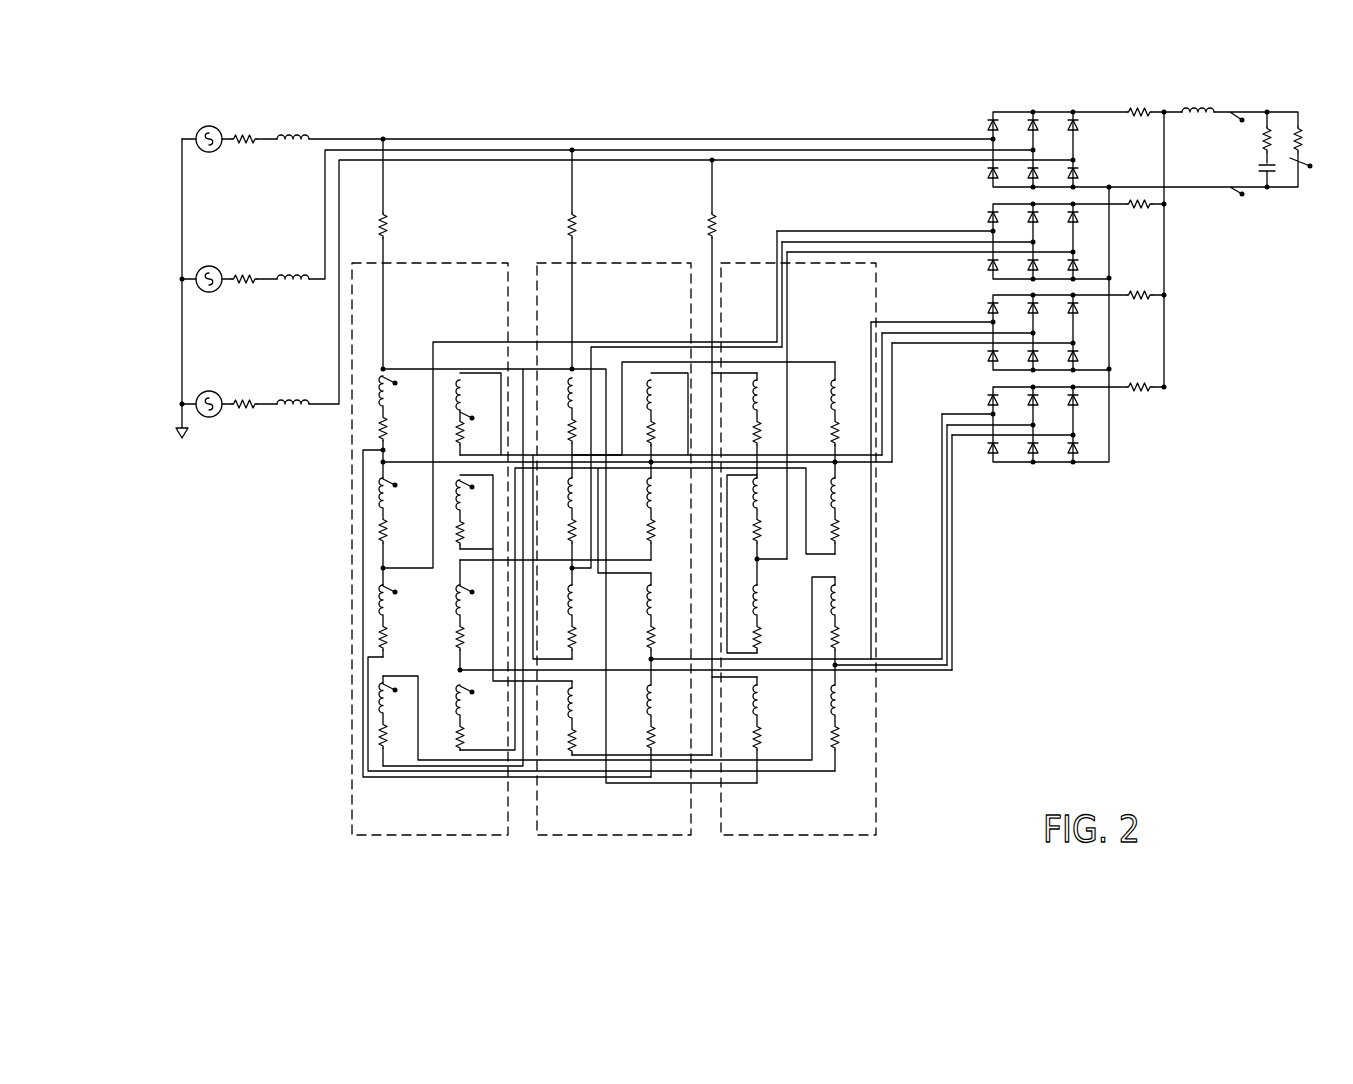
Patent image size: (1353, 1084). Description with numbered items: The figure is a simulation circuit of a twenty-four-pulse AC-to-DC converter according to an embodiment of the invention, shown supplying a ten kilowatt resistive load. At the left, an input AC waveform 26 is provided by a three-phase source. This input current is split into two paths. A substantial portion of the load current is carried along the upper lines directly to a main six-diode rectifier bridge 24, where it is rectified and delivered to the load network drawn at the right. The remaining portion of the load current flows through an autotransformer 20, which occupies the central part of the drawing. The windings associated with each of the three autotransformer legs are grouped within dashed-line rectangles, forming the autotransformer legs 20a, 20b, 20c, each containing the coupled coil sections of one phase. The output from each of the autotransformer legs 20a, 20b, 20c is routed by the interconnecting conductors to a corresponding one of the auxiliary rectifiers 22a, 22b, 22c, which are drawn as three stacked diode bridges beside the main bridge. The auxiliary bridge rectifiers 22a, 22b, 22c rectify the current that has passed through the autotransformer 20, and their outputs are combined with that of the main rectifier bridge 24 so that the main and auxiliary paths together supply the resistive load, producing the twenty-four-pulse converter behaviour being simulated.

The autotransformer 20 is at (662, 512).
The autotransformer leg 20a is at (480, 835).
The autotransformer leg 20b is at (655, 835).
The autotransformer leg 20c is at (826, 835).
The auxiliary rectifier 22a is at (1132, 243).
The auxiliary rectifier 22b is at (1132, 334).
The auxiliary rectifier 22c is at (1135, 424).
The main 6-diode rectifier bridge 24 is at (1122, 149).
The input AC waveform 26 is at (182, 345).